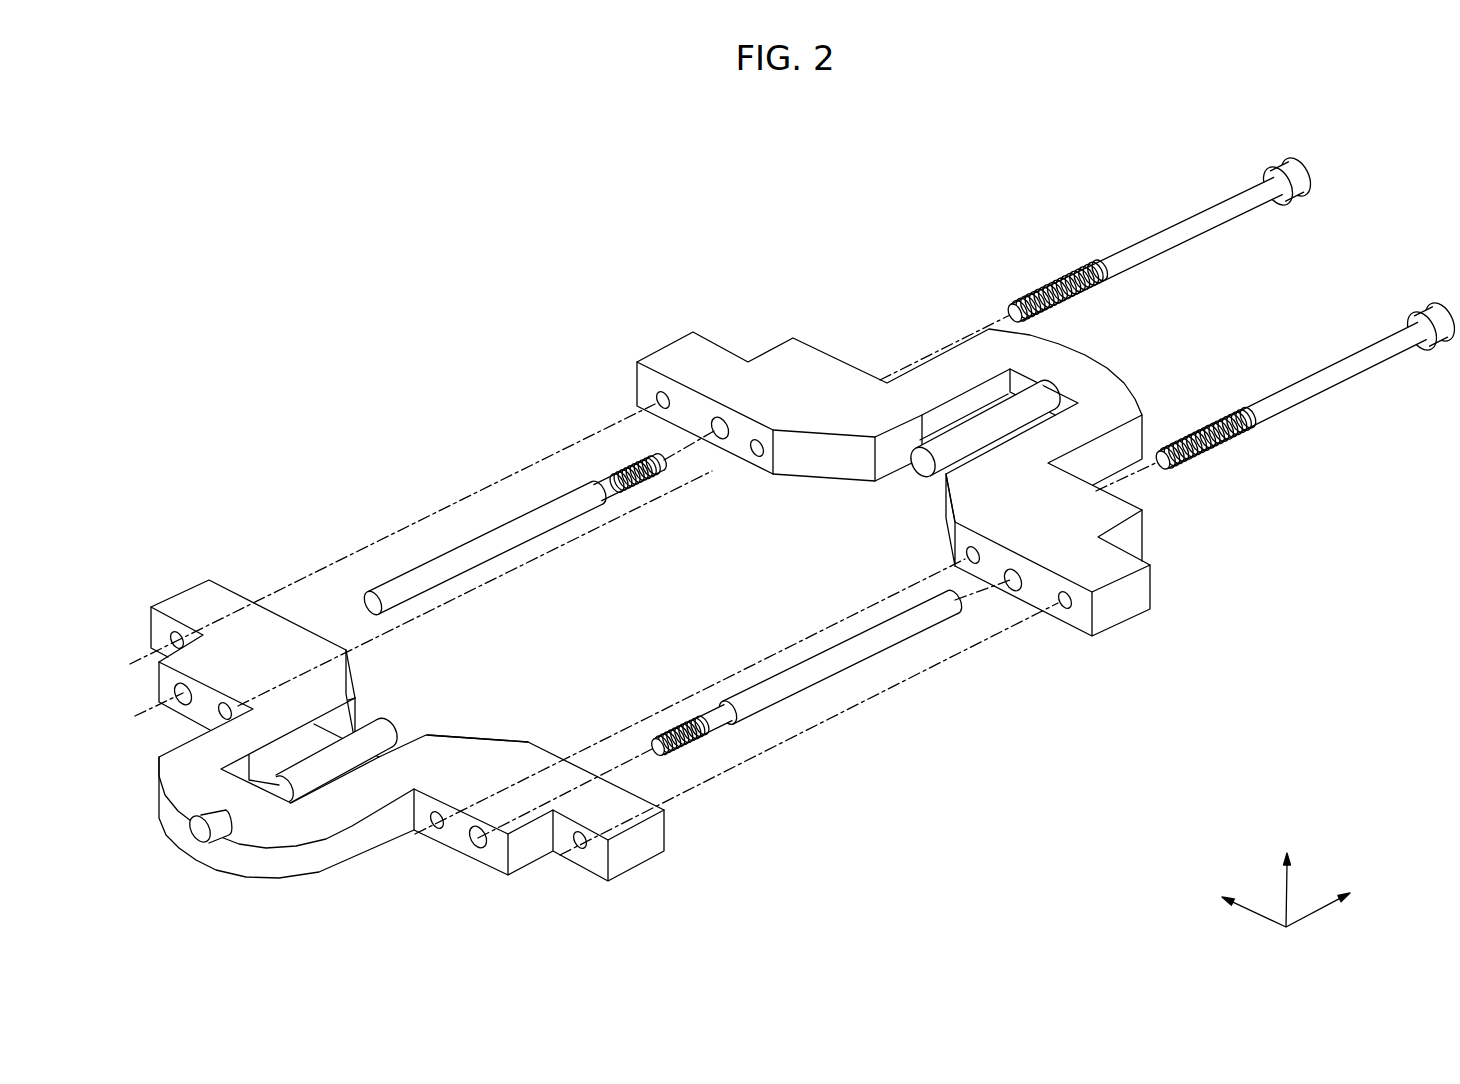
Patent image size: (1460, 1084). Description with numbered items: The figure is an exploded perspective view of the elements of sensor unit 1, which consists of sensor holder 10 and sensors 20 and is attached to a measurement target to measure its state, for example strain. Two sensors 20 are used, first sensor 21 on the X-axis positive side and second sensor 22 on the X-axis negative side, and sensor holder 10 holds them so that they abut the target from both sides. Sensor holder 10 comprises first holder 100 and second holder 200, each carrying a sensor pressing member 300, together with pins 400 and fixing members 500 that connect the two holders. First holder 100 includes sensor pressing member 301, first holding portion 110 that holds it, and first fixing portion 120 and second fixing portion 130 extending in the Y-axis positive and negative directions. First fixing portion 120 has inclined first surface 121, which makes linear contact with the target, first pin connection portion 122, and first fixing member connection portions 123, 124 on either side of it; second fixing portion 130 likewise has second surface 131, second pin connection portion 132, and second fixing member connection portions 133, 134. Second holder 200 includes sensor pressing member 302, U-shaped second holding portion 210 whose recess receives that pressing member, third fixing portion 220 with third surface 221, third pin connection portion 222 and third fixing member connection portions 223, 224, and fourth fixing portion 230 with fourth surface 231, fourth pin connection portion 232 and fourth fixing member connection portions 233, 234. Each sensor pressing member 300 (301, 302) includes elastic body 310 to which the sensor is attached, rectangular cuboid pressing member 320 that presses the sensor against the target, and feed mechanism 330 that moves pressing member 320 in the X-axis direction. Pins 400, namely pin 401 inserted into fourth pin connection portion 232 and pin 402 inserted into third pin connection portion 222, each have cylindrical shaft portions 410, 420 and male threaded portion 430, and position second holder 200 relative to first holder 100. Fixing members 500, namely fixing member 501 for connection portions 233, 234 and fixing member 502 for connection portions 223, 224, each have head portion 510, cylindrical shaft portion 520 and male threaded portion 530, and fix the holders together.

The sensor unit 1 is at (276, 274).
The sensor holder 10 is at (298, 373).
The sensor 20 is at (625, 611).
The first sensor 21 is at (920, 470).
The second sensor 22 is at (399, 728).
The first holder 100 is at (739, 317).
The first holding portion 110 is at (1082, 364).
The first fixing portion 120 is at (673, 350).
The first surface 121 is at (807, 468).
The first pin connection portion 122 is at (721, 438).
The first fixing member connection portion 123 is at (760, 456).
The first fixing member connection portion 124 is at (658, 398).
The second fixing portion 130 is at (1130, 610).
The second surface 131 is at (946, 523).
The second pin connection portion 132 is at (1013, 592).
The second fixing member connection portion 133 is at (971, 565).
The second fixing member connection portion 134 is at (1065, 611).
The second holder 200 is at (341, 893).
The second holding portion 210 is at (244, 843).
The third fixing portion 220 is at (645, 854).
The third surface 221 is at (483, 738).
The third pin connection portion 222 is at (479, 852).
The third fixing member connection portion 223 is at (440, 835).
The third fixing member connection portion 224 is at (581, 856).
The fourth fixing portion 230 is at (190, 590).
The fourth surface 231 is at (355, 678).
The fourth pin connection portion 232 is at (174, 693).
The fourth fixing member connection portion 233 is at (215, 714).
The fourth fixing member connection portion 234 is at (166, 637).
The sensor pressing member 300 is at (638, 509).
The sensor pressing member 301 is at (990, 283).
The sensor pressing member 302 is at (383, 500).
The elastic body 310 is at (930, 396).
The pressing member 320 is at (967, 403).
The feed mechanism 330 is at (1030, 380).
The pin 400 is at (663, 617).
The pin 401 is at (545, 410).
The pin 402 is at (880, 822).
The cylindrical shaft portion 410 is at (470, 520).
The cylindrical shaft portion 420 is at (545, 485).
The male threaded portion 430 is at (612, 477).
The fixing member 500 is at (1232, 324).
The fixing member 501 is at (1210, 134).
The fixing member 502 is at (1405, 512).
The head portion 510 is at (1277, 172).
The cylindrical shaft portion 520 is at (1167, 223).
The male threaded portion 530 is at (1053, 283).